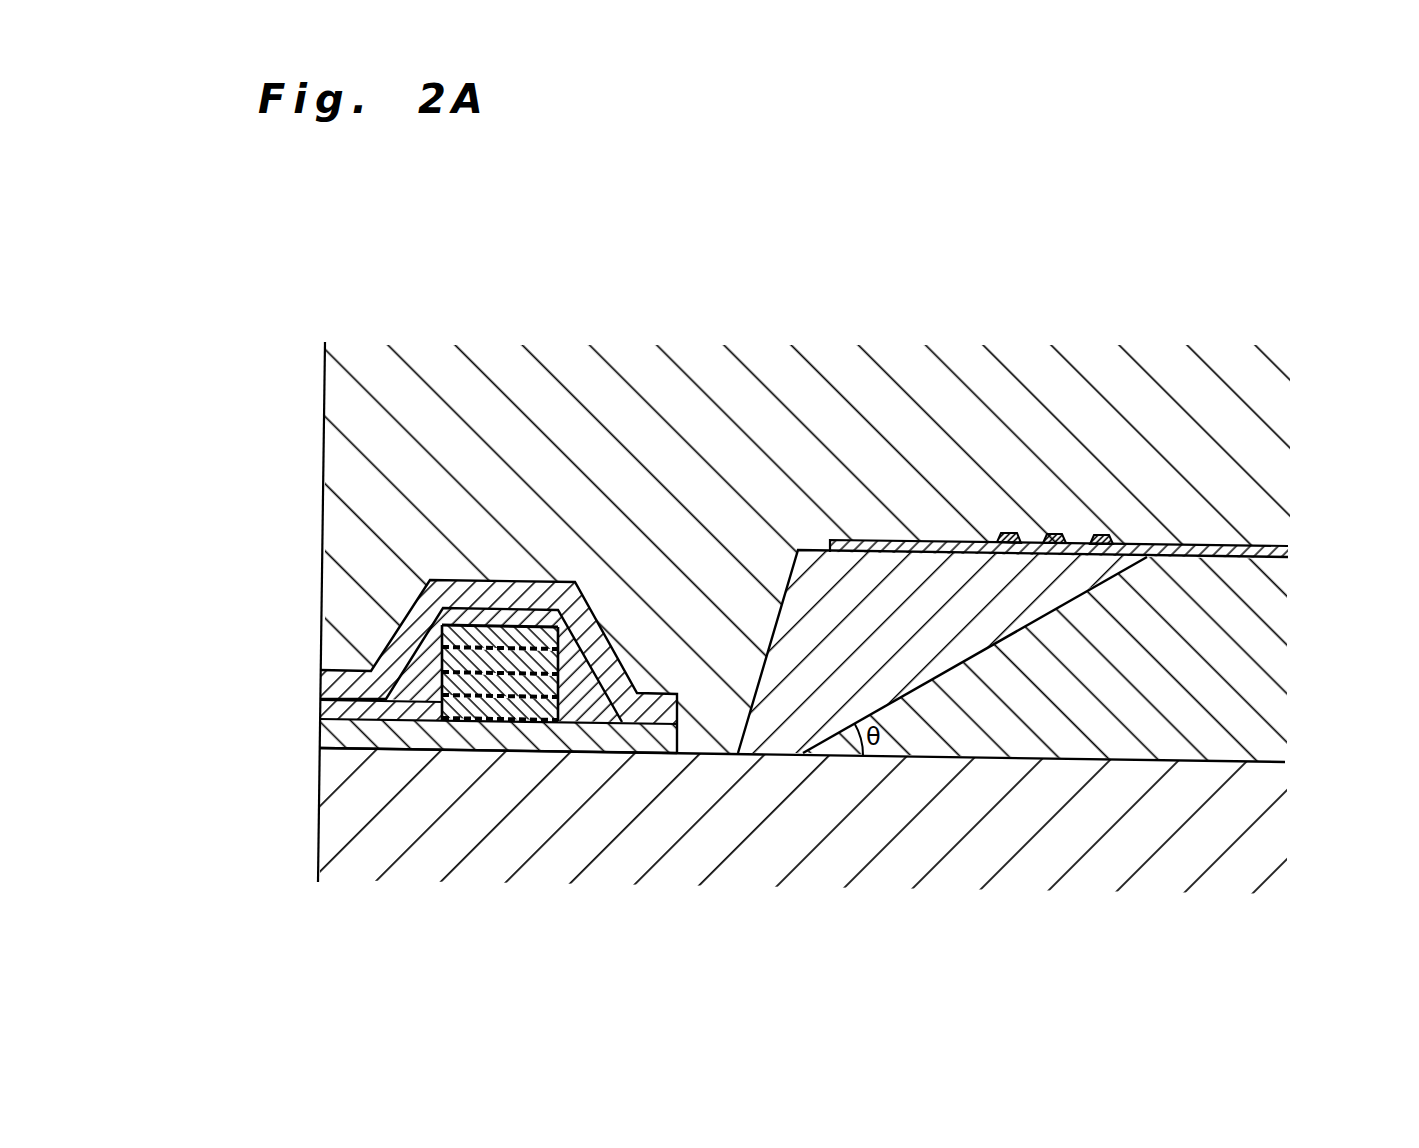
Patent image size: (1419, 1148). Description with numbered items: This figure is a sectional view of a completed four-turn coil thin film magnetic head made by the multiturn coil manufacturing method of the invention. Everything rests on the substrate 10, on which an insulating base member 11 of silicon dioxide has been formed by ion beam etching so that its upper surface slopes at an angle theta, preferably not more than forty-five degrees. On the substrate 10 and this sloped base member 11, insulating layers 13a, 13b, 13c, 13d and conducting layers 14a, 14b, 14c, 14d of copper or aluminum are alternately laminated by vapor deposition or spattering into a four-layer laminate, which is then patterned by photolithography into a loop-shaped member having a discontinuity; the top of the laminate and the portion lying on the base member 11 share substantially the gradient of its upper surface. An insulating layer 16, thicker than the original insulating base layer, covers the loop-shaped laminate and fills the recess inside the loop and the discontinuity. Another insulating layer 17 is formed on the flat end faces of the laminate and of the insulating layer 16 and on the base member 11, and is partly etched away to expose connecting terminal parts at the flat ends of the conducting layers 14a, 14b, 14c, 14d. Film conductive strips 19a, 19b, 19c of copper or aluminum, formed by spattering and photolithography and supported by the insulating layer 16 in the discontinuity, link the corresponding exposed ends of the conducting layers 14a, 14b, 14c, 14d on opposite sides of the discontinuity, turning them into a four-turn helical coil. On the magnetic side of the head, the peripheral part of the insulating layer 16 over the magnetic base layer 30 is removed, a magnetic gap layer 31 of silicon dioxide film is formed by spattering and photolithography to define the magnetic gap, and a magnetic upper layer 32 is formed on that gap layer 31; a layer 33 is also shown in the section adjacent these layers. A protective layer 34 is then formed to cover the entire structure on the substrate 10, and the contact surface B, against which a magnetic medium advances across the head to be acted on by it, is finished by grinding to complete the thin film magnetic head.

The substrate 10 is at (380, 825).
The insulating base member 11 is at (1235, 720).
The insulating layer 13a is at (548, 706).
The insulating layer 13b is at (560, 686).
The insulating layer 13c is at (565, 652).
The insulating layer 13d is at (588, 652).
The conducting layer 14a is at (553, 718).
The conducting layer 14b is at (562, 672).
The conducting layer 14c is at (565, 668).
The conducting layer 14d is at (541, 622).
The insulating layer 16 is at (877, 582).
The insulating layer 17 is at (1223, 543).
The film conductive strip 19a is at (1107, 533).
The film conductive strip 19b is at (1060, 532).
The film conductive strip 19c is at (1010, 532).
The magnetic base layer 30 is at (320, 740).
The contact surface B is at (350, 737).
The magnetic gap layer 31 is at (320, 707).
The magnetic upper layer 32 is at (405, 612).
The inner protective layer 33 is at (400, 686).
The protective layer 34 is at (372, 425).